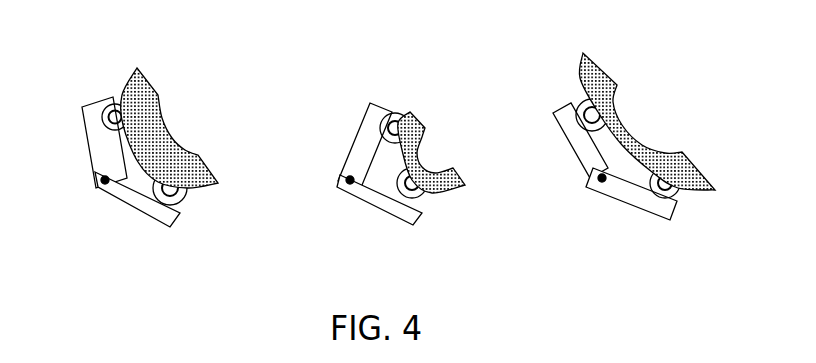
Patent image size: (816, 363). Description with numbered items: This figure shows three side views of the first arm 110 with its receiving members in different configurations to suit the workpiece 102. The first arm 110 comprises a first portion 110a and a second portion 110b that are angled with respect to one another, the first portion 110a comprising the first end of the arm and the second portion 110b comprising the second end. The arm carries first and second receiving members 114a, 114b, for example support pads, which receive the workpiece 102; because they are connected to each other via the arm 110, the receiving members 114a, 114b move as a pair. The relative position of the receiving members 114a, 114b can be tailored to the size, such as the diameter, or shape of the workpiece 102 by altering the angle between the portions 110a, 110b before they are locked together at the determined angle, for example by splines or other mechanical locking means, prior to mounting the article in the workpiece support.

The workpiece 102 is at (150, 85).
The first arm 110 is at (152, 207).
The first portion 110a is at (90, 138).
The second portion 110b is at (125, 193).
The first receiving member 114a is at (108, 103).
The second receiving member 114b is at (187, 203).